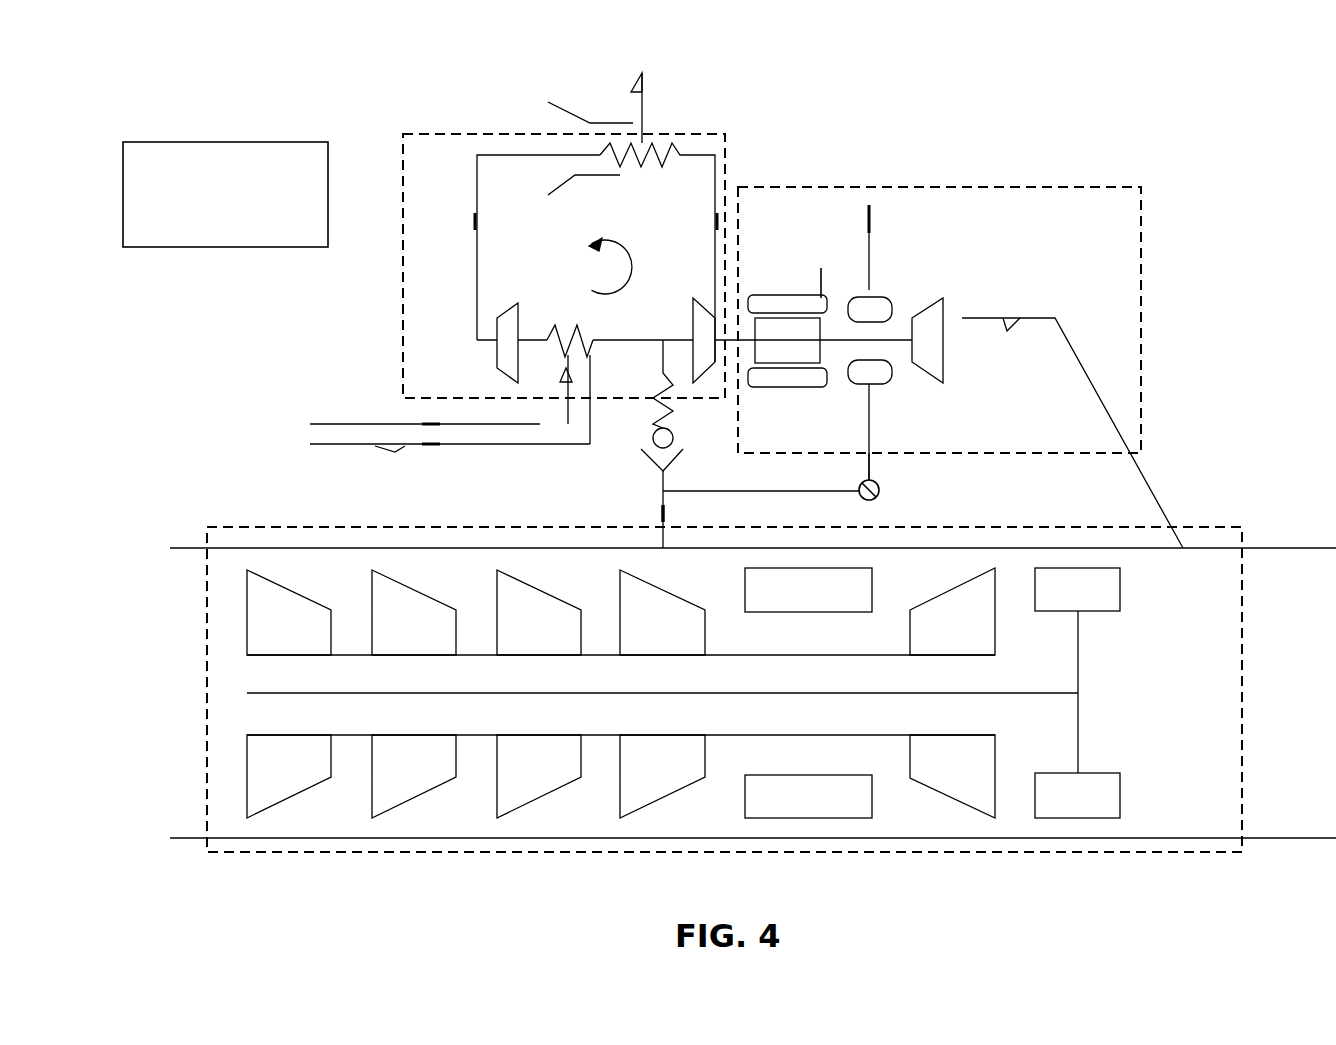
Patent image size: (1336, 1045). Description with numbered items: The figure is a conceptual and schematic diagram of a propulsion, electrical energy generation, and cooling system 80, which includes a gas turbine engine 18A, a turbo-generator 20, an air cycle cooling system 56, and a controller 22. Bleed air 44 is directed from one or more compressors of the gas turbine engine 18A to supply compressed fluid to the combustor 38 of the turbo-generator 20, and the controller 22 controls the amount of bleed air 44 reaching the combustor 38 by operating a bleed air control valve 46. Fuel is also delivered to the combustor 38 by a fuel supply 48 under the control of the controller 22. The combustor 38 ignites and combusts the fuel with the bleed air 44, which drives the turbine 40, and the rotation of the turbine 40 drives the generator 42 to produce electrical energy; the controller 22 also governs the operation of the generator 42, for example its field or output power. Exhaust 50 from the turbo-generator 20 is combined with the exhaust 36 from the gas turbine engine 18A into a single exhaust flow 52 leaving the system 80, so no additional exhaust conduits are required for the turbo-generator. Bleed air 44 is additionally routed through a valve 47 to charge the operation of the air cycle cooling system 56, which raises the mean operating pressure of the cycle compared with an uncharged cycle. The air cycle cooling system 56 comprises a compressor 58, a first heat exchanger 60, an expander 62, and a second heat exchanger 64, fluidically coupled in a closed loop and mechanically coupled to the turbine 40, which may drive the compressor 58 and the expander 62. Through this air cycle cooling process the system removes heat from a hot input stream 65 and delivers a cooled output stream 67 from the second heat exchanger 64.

The propulsion, electrical energy generation, and cooling system 80 is at (1230, 76).
The controller 22 is at (225, 194).
The air cycle cooling system 56 is at (423, 134).
The first heat exchanger 60 is at (660, 142).
The second heat exchanger 64 is at (578, 330).
The expander 62 is at (497, 344).
The compressor 58 is at (693, 312).
The hot input stream 65 is at (350, 422).
The cooled output stream 67 is at (338, 446).
The valve 47 is at (652, 437).
The bleed air 44 is at (660, 500).
The turbo-generator 20 is at (1020, 187).
The generator 42 is at (792, 388).
The fuel supply 48 is at (894, 257).
The combustor 38 is at (888, 370).
The turbine 40 is at (947, 315).
The exhaust 50 is at (1123, 437).
The bleed air control valve 46 is at (880, 482).
The gas turbine engine 18A is at (250, 525).
The single exhaust flow 52 is at (780, 693).
The exhaust 36 is at (1112, 693).